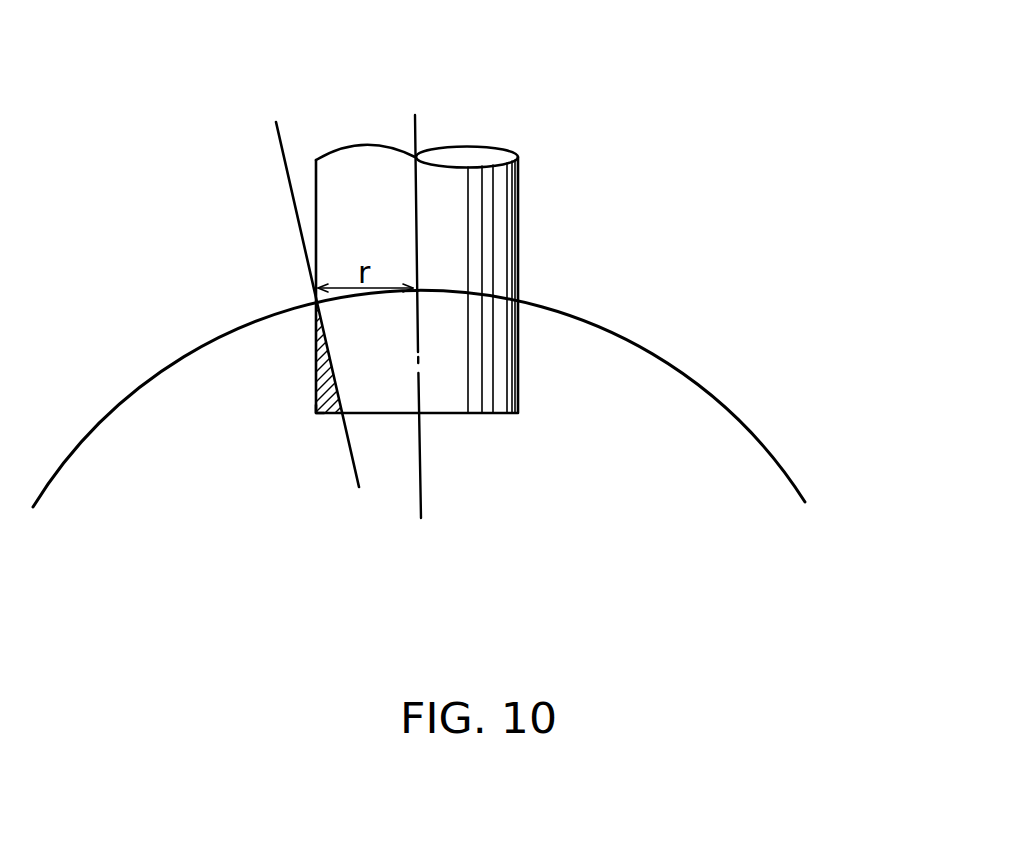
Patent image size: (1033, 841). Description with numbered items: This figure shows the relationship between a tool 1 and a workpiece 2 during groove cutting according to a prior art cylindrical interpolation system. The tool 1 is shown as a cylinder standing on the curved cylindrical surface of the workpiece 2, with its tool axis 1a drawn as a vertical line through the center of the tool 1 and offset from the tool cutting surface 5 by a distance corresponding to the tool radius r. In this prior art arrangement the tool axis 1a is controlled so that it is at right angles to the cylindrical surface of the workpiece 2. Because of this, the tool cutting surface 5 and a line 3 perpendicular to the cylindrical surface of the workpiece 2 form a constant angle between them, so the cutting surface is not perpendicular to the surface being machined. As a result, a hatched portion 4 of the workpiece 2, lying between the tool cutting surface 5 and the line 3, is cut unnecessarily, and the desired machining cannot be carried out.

The tool 1 is at (520, 175).
The tool axis 1a is at (417, 127).
The workpiece 2 is at (683, 368).
The line perpendicular to the cylindrical surface 3 is at (282, 150).
The hatched portion 4 is at (314, 412).
The tool cutting surface 5 is at (314, 353).